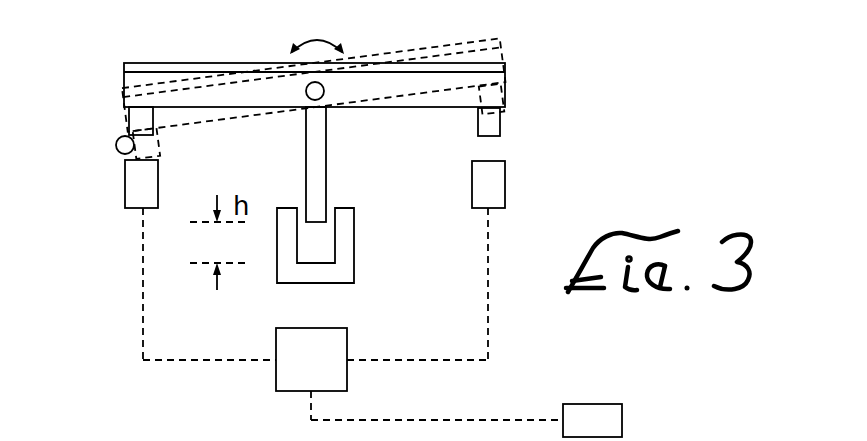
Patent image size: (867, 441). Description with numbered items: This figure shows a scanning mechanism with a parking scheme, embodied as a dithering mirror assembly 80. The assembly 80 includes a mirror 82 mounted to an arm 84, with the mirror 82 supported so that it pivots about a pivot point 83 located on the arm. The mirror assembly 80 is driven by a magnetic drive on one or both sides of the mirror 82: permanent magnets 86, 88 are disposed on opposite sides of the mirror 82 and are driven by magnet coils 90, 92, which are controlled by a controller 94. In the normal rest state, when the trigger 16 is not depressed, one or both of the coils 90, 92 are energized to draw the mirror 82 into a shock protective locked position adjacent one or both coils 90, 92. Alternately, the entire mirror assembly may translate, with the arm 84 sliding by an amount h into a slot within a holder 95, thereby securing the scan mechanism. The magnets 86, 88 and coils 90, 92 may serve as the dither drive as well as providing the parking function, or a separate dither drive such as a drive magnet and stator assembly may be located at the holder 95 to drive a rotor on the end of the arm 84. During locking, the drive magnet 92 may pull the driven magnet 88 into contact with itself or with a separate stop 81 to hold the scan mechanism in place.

The dithering mirror assembly 80 is at (100, 44).
The mirror 82 is at (181, 60).
The pivot point 83 is at (324, 91).
The arm 84 is at (312, 170).
The permanent magnet 86 is at (494, 126).
The permanent magnet 88 is at (140, 121).
The stop 81 is at (116, 148).
The magnet coil 92 is at (133, 191).
The magnet coil 90 is at (497, 186).
The holder 95 is at (354, 256).
The controller 94 is at (287, 377).
The trigger 16 is at (590, 404).